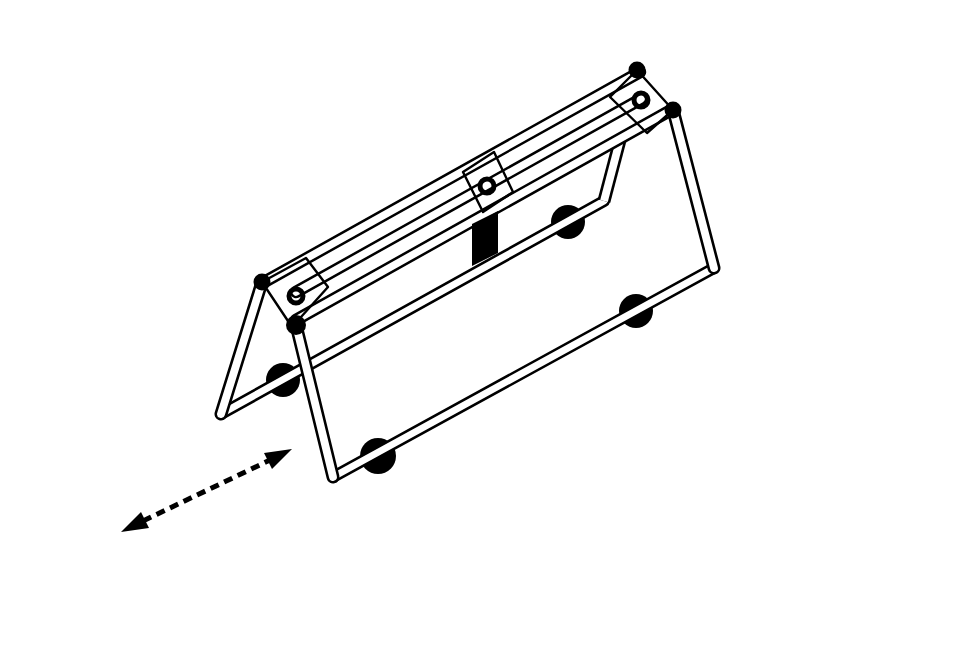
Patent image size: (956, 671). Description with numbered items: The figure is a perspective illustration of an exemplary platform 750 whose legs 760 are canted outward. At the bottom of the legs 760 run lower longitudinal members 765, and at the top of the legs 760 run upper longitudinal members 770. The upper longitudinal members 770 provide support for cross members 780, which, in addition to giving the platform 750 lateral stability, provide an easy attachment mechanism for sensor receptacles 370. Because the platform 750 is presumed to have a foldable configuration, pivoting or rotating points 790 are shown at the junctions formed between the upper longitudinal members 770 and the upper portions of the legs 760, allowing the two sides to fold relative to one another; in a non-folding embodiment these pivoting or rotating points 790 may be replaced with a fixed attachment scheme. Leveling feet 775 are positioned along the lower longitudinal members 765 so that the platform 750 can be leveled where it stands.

The platform 750 is at (155, 98).
The legs 760 is at (246, 336).
The lower longitudinal members 765 is at (553, 364).
The upper longitudinal members 770 is at (409, 211).
The leveling feet 775 is at (620, 298).
The cross members 780 is at (487, 167).
The pivoting or rotating points 790 is at (677, 102).
The sensor receptacles 370 is at (613, 100).